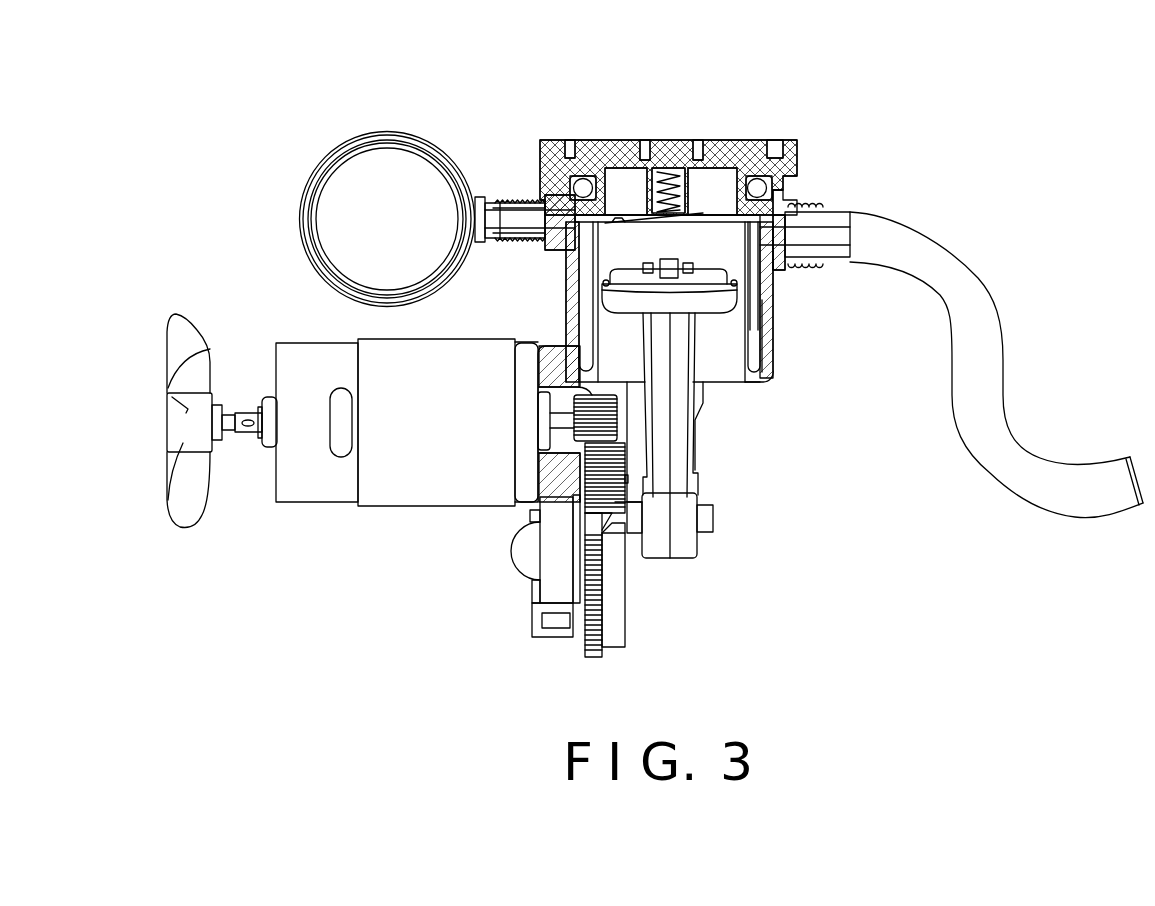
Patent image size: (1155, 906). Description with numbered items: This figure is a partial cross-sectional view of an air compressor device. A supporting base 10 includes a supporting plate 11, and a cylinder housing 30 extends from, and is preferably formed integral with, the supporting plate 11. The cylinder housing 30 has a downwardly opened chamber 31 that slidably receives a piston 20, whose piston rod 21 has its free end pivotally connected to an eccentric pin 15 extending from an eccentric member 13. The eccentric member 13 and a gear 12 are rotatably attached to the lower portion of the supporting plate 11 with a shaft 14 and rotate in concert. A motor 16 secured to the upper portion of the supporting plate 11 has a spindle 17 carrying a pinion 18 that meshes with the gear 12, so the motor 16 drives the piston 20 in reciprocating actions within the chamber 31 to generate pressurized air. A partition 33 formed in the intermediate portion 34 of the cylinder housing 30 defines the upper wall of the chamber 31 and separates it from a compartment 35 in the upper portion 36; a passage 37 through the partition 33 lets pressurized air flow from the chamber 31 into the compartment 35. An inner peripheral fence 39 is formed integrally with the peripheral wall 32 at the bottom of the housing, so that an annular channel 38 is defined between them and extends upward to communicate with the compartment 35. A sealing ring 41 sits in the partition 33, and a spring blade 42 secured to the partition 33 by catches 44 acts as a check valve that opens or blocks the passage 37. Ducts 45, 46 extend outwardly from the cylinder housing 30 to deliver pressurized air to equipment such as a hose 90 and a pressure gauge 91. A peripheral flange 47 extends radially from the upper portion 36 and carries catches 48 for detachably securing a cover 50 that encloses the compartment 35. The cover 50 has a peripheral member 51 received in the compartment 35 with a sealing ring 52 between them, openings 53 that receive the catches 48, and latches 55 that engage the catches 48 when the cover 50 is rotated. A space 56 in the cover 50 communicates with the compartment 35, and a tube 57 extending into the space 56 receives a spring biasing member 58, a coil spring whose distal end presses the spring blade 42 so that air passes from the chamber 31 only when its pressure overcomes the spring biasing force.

The supporting base 10 is at (530, 607).
The supporting plate 11 is at (543, 633).
The gear 12 is at (597, 665).
The eccentric member 13 is at (617, 623).
The shaft 14 is at (528, 552).
The eccentric pin 15 is at (713, 522).
The motor 16 is at (297, 490).
The spindle 17 is at (552, 427).
The pinion 18 is at (618, 425).
The piston 20 is at (753, 327).
The piston rod 21 is at (683, 548).
The cylinder housing 30 is at (790, 362).
The chamber 31 is at (748, 385).
The peripheral wall 32 is at (745, 392).
The partition 33 is at (708, 297).
The intermediate portion 34 is at (513, 248).
The compartment 35 is at (630, 222).
The upper portion 36 is at (762, 188).
The passage 37 is at (667, 232).
The annular channel 38 is at (765, 343).
The inner peripheral fence 39 is at (722, 335).
The sealing ring 41 is at (643, 229).
The spring blade 42 is at (645, 215).
The catches 44 is at (572, 235).
The duct 45 is at (850, 208).
The duct 46 is at (552, 202).
The peripheral flange 47 is at (542, 173).
The catches 48 is at (575, 150).
The cover 50 is at (745, 155).
The peripheral member 51 is at (605, 220).
The sealing ring 52 is at (793, 172).
The openings 53 is at (748, 160).
The latches 55 is at (560, 147).
The space 56 is at (713, 177).
The tube 57 is at (690, 180).
The spring biasing member 58 is at (660, 173).
The hose 90 is at (990, 468).
The pressure gauge 91 is at (335, 190).